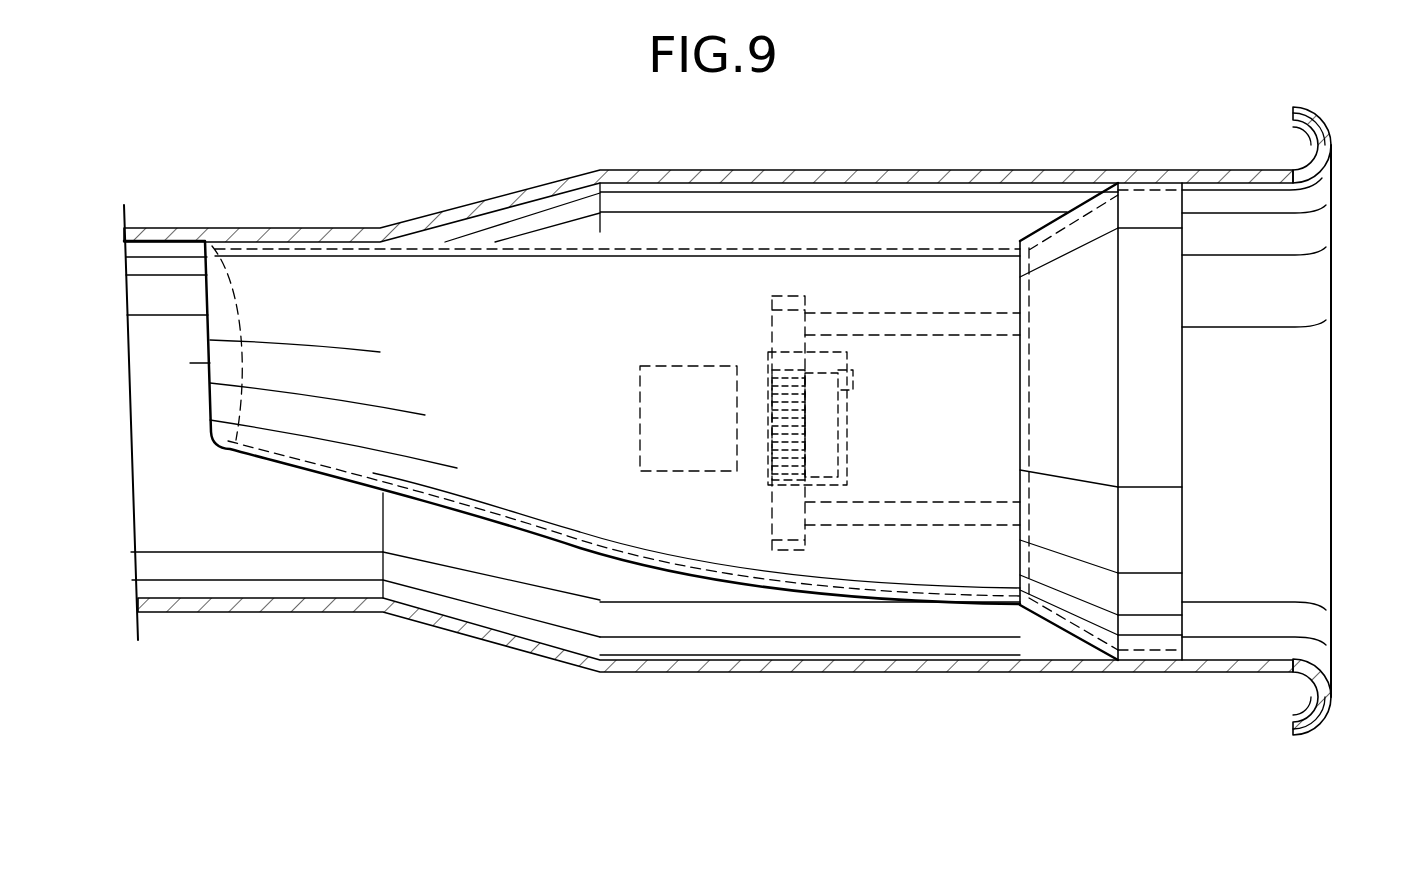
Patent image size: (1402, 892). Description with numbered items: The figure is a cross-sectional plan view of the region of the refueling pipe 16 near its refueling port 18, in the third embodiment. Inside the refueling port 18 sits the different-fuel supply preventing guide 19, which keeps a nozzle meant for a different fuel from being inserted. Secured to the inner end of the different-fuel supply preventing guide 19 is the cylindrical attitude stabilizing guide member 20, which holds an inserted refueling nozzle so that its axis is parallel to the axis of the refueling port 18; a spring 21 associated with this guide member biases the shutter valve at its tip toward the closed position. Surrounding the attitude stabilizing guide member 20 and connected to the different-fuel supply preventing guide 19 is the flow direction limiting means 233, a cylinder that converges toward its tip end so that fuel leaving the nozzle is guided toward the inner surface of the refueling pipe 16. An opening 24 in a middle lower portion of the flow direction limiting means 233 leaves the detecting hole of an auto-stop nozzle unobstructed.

The refueling pipe 16 is at (520, 192).
The refueling port 18 is at (1270, 452).
The different-fuel supply preventing guide 19 is at (1072, 238).
The attitude stabilizing guide member 20 is at (905, 525).
The spring 21 is at (775, 440).
The flow direction limiting means 233 is at (581, 525).
The opening 24 is at (655, 395).